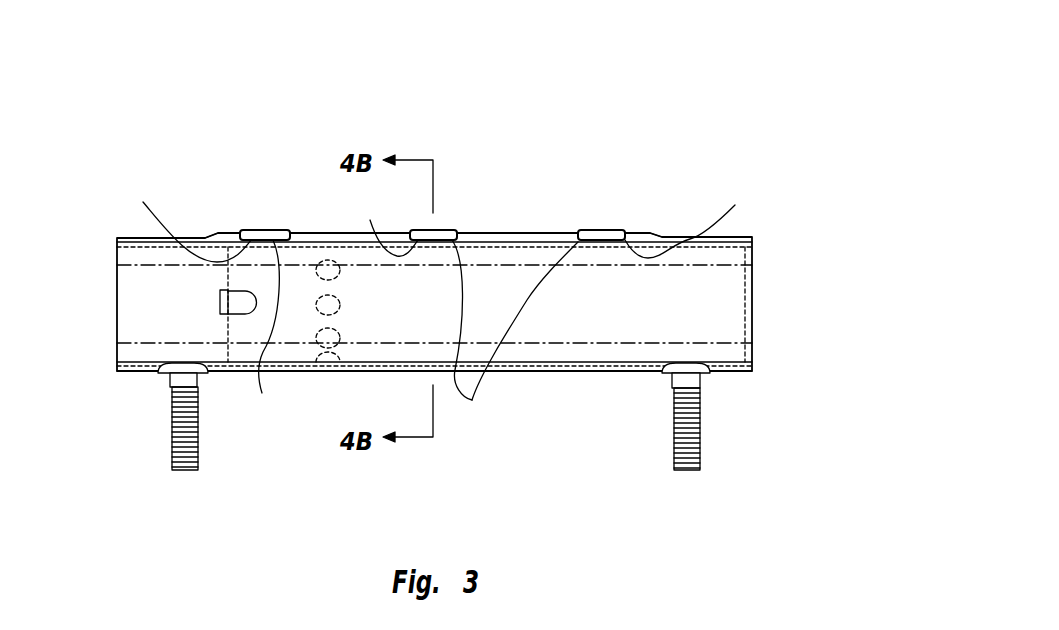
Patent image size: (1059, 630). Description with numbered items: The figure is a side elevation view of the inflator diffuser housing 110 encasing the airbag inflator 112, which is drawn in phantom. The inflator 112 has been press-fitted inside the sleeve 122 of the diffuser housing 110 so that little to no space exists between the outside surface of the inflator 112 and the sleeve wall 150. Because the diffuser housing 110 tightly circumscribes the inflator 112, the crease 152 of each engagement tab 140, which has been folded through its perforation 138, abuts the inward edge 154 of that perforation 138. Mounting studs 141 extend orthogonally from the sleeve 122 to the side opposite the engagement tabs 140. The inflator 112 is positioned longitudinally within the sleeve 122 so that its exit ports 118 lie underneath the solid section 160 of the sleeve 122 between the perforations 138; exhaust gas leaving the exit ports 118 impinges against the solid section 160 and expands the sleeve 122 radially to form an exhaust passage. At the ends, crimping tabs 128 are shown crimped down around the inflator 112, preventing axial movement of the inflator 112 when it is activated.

The inflator diffuser housing 110 is at (740, 136).
The airbag inflator 112 is at (727, 318).
The exit ports 118 is at (338, 346).
The sleeve 122 is at (578, 323).
The crimping tabs 128 is at (220, 295).
The perforations 138 is at (437, 221).
The engagement tabs 140 is at (247, 232).
The mounting studs 141 is at (170, 430).
The sleeve wall 150 is at (737, 372).
The crease 152 is at (268, 230).
The inward edge 154 is at (418, 329).
The solid section 160 is at (358, 287).